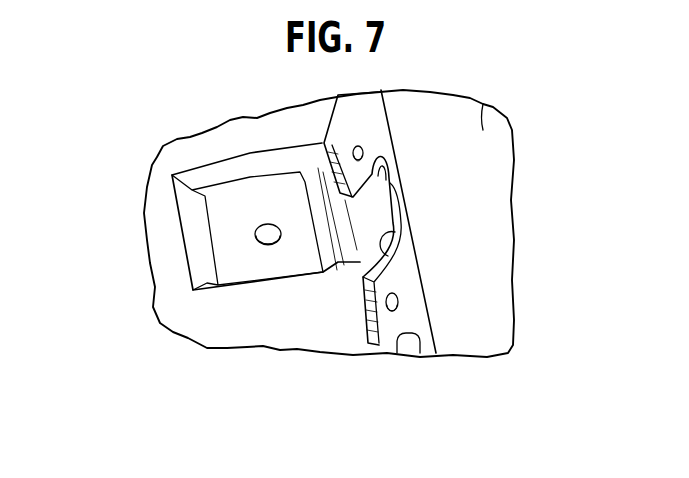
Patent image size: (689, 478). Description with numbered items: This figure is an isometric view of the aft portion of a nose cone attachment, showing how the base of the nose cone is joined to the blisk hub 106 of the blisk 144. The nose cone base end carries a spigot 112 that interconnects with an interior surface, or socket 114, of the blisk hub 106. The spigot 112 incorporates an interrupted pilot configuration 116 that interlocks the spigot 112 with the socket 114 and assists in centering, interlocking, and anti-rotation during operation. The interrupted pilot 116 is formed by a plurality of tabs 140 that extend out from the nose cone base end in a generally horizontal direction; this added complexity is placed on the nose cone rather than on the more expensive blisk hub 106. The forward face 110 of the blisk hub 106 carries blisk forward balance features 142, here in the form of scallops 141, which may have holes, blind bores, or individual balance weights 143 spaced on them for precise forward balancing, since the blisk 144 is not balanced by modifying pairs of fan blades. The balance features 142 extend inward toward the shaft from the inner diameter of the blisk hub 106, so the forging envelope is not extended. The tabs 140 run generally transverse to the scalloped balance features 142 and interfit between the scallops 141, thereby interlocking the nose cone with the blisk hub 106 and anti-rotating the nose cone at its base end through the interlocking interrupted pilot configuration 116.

The blisk hub 106 is at (495, 172).
The forward face of the blisk hub 110 is at (456, 238).
The spigot 112 is at (418, 202).
The interior surface (socket) of the blisk hub 114 is at (360, 266).
The interrupted pilot configuration 116 is at (304, 238).
The tabs 140 is at (282, 98).
The scallops 141 is at (362, 148).
The blisk forward balance features 142 is at (363, 157).
The individual balance weights 143 is at (353, 127).
The blisk 144 is at (483, 130).